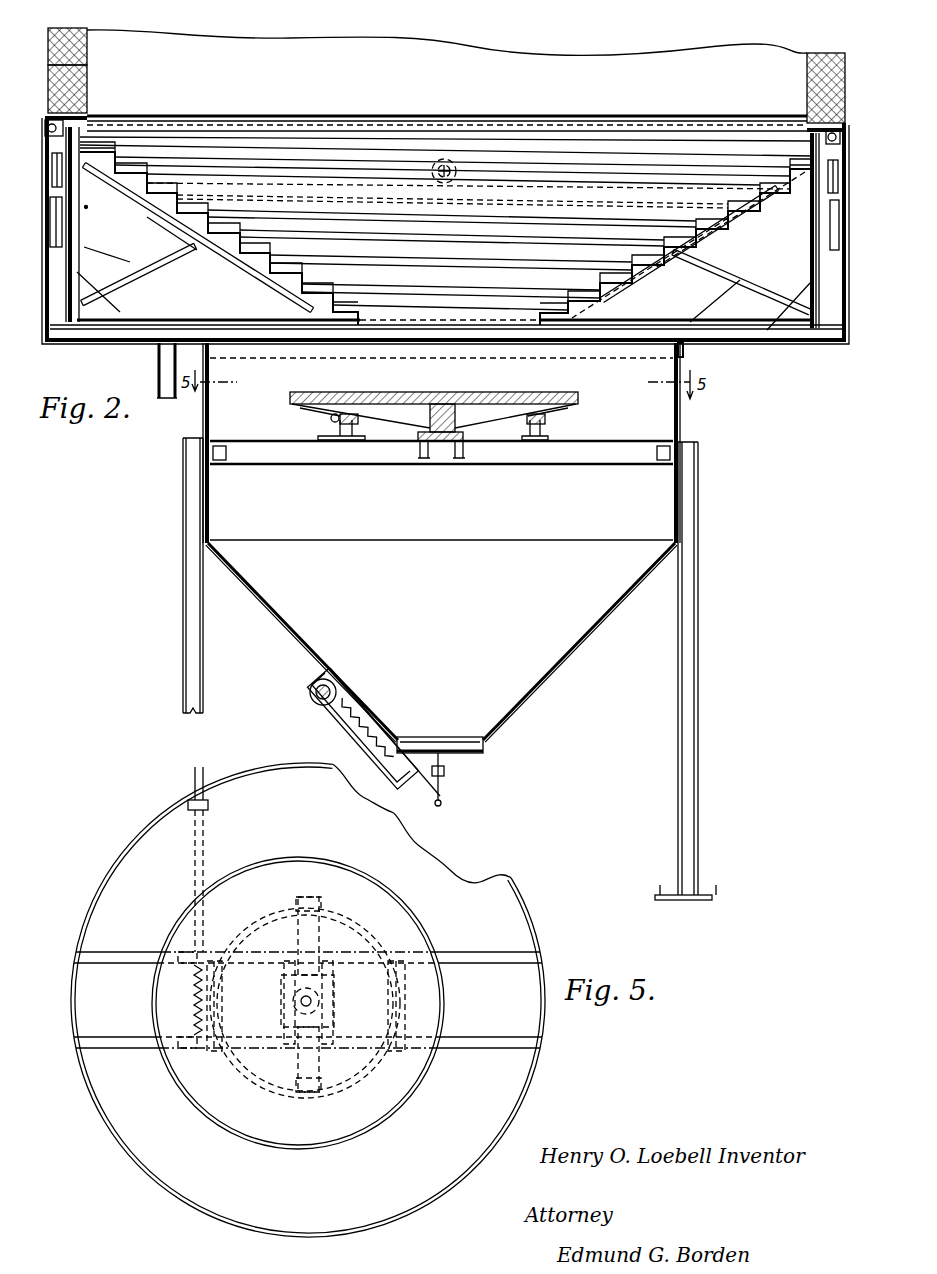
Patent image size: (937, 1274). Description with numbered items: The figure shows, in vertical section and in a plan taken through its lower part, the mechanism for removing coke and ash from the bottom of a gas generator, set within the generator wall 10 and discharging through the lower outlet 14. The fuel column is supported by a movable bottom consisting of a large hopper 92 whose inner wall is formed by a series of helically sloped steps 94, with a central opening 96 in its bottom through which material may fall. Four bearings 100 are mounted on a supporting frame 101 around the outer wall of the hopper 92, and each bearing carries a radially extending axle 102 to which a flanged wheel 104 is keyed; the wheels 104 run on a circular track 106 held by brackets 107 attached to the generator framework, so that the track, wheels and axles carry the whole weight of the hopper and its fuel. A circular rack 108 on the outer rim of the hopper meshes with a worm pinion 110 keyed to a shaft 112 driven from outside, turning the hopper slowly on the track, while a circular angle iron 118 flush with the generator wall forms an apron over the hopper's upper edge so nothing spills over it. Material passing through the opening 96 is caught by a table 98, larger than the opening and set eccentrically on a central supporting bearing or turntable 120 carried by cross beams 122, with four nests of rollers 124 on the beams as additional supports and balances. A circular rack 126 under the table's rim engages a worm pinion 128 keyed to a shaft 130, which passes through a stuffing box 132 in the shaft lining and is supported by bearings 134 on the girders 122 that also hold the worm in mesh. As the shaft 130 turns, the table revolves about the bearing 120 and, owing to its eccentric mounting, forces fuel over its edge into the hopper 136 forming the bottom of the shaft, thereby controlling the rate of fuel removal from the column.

In FIG. 2, the wall 10 is at (87, 46).
In FIG. 2, the worm pinion 110 is at (87, 104).
In FIG. 2, the circular rack 108 is at (836, 132).
In FIG. 2, the shaft 112 is at (50, 124).
In FIG. 2, the circular angle iron 118 is at (137, 118).
In FIG. 2, the flanged wheel 104 is at (53, 170).
In FIG. 2, the circular track 106 is at (51, 210).
In FIG. 2, the axle 102 is at (85, 148).
In FIG. 2, the bearing 100 is at (87, 207).
In FIG. 2, the bracket 107 is at (84, 247).
In FIG. 2, the supporting frame 101 is at (77, 258).
In FIG. 2, the hopper 92 is at (215, 238).
In FIG. 2, the helically sloped steps 94 is at (250, 258).
In FIG. 2, the central opening 96 is at (375, 318).
In FIG. 2, the table 98 is at (580, 398).
In FIG. 2, the central supporting bearing or turntable 120 is at (447, 443).
In FIG. 5, the central supporting bearing or turntable 120 is at (337, 1003).
In FIG. 2, the cross beams 122 is at (320, 455).
In FIG. 5, the cross beams 122 is at (99, 1040).
In FIG. 2, the nests of rollers 124 is at (540, 455).
In FIG. 5, the nests of rollers 124 is at (313, 904).
In FIG. 2, the circular rack 126 is at (547, 420).
In FIG. 5, the circular rack 126 is at (376, 911).
In FIG. 2, the worm pinion 128 is at (333, 418).
In FIG. 5, the worm pinion 128 is at (192, 1000).
In FIG. 5, the shaft 130 is at (262, 917).
In FIG. 5, the stuffing box 132 is at (208, 804).
In FIG. 5, the bearings 134 is at (189, 965).
In FIG. 2, the hopper 136 is at (525, 687).
In FIG. 2, the discharge spout 14 is at (465, 752).